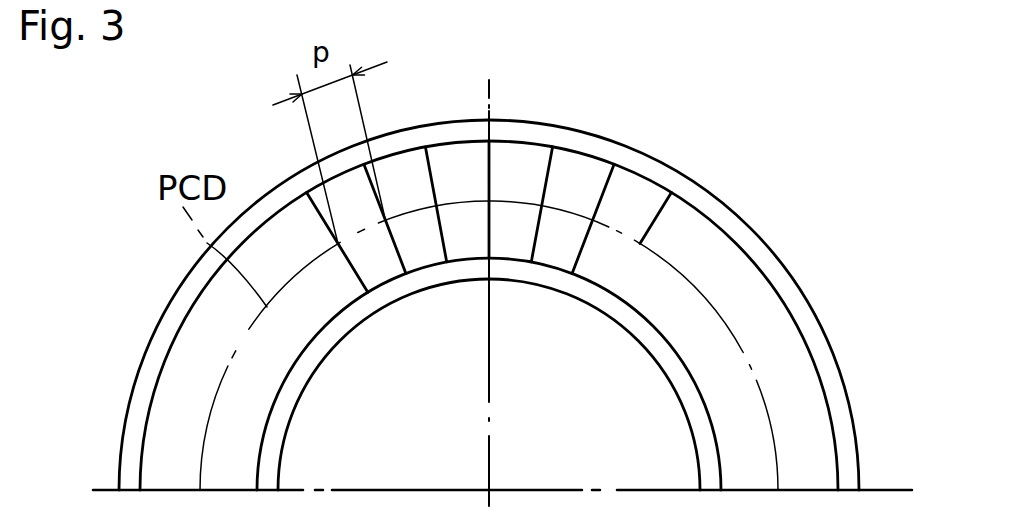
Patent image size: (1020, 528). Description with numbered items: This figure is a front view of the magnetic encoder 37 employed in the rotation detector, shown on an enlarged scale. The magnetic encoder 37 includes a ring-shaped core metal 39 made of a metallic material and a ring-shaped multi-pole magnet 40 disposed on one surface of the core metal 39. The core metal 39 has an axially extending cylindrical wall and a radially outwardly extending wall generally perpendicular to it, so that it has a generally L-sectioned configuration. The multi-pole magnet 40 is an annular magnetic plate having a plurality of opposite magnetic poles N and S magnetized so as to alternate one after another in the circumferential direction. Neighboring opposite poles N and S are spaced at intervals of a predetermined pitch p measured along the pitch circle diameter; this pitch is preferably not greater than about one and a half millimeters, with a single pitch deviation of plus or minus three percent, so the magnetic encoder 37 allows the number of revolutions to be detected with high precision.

The magnetic encoder 37 is at (679, 156).
The core metal 39 is at (648, 338).
The multi-pole magnet 40 is at (578, 168).